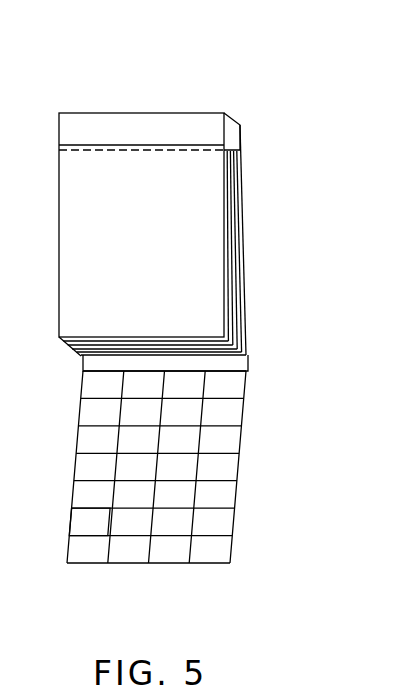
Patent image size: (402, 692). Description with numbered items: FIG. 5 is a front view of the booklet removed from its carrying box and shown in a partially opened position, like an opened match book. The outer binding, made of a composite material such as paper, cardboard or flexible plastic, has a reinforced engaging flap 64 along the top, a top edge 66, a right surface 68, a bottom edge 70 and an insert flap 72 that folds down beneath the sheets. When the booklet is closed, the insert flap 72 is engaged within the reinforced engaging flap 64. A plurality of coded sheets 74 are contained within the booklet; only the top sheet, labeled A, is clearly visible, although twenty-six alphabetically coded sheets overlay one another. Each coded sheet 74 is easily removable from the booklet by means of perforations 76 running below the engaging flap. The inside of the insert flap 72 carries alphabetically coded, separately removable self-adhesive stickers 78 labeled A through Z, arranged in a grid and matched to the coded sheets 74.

The reinforced engaging flap 64 is at (83, 130).
The top edge 66 is at (230, 125).
The right surface 68 is at (243, 290).
The bottom edge 70 is at (248, 357).
The insert flap 72 is at (240, 503).
The coded sheets 74 is at (235, 225).
The perforations 76 is at (80, 151).
The coded self-adhesive stickers 78 is at (104, 527).